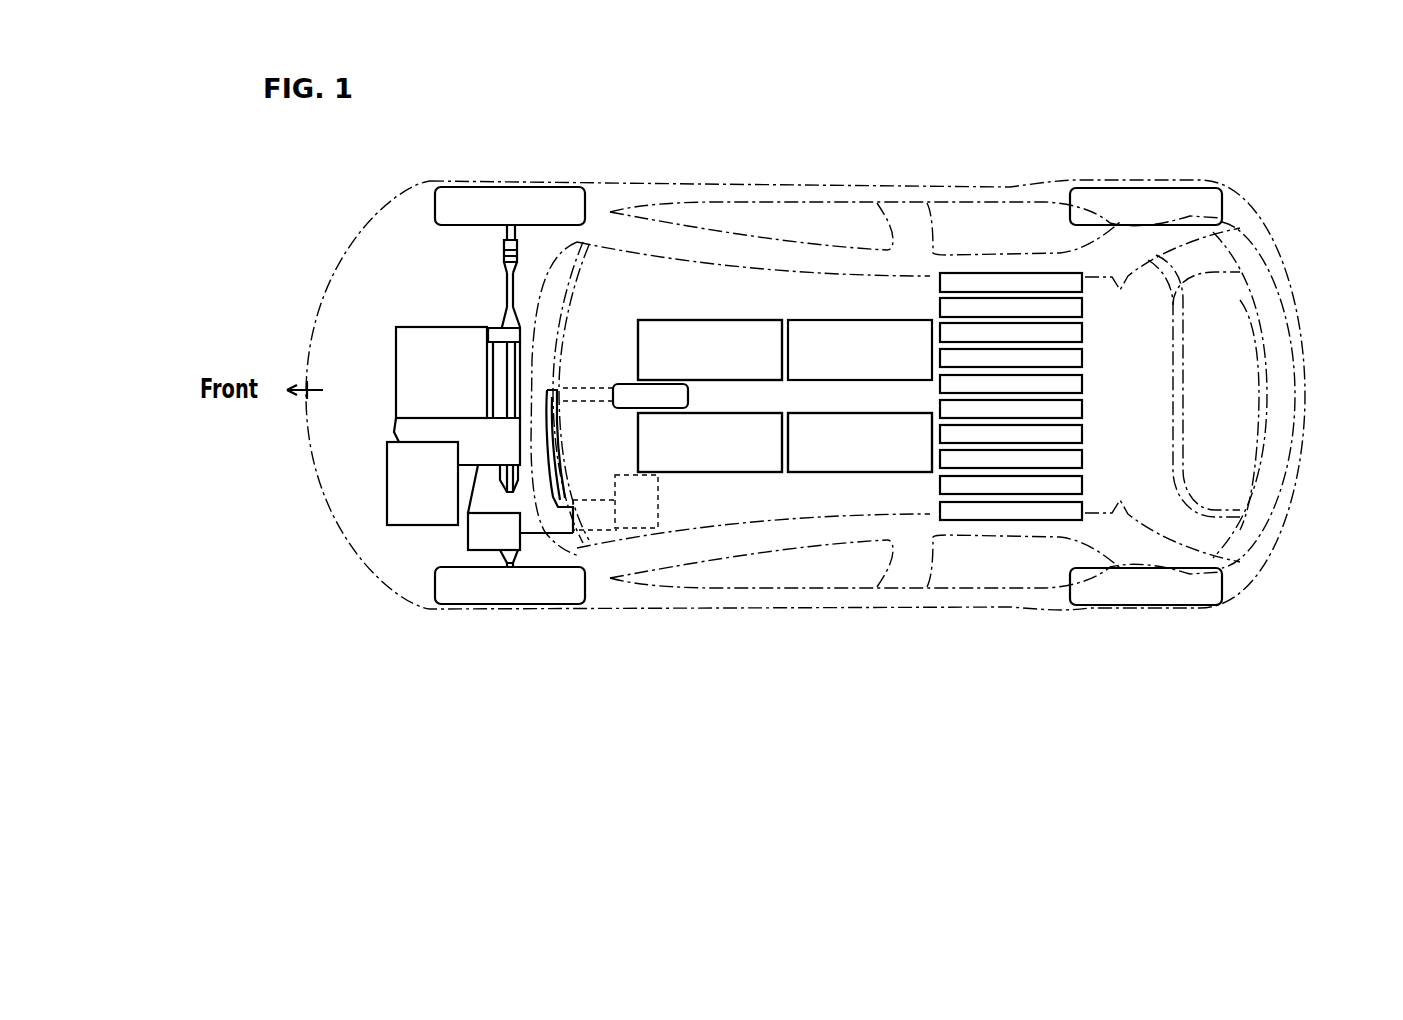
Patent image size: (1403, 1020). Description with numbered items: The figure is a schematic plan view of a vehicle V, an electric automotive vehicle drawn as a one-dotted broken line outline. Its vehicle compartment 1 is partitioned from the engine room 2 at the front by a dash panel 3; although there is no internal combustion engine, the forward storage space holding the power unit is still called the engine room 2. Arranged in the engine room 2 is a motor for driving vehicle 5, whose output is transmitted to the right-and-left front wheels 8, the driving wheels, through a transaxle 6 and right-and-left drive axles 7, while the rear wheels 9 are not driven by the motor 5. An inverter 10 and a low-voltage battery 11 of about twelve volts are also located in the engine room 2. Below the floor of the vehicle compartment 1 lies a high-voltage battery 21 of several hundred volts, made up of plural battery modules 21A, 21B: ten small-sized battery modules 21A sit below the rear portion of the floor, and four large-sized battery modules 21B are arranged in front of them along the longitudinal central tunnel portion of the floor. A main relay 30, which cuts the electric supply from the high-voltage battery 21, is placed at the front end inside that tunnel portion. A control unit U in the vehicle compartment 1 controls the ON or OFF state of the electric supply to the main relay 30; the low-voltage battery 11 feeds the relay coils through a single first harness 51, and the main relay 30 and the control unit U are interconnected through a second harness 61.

The vehicle compartment 1 is at (795, 503).
The engine room 2 is at (380, 560).
The dash panel 3 is at (573, 292).
The motor for driving vehicle 5 is at (423, 337).
The transaxle 6 is at (442, 427).
The drive axles 7 is at (510, 283).
The front wheels 8 is at (475, 197).
The rear wheels 9 is at (1123, 200).
The inverter 10 is at (400, 495).
The low-voltage battery 11 is at (492, 533).
The high-voltage battery 21 is at (837, 337).
The battery modules 21A is at (1073, 283).
The battery modules 21B is at (688, 330).
The main relay 30 is at (630, 383).
The first harness 51 is at (543, 390).
The second harness 61 is at (552, 438).
The control unit U is at (630, 513).
The vehicle V is at (1240, 186).